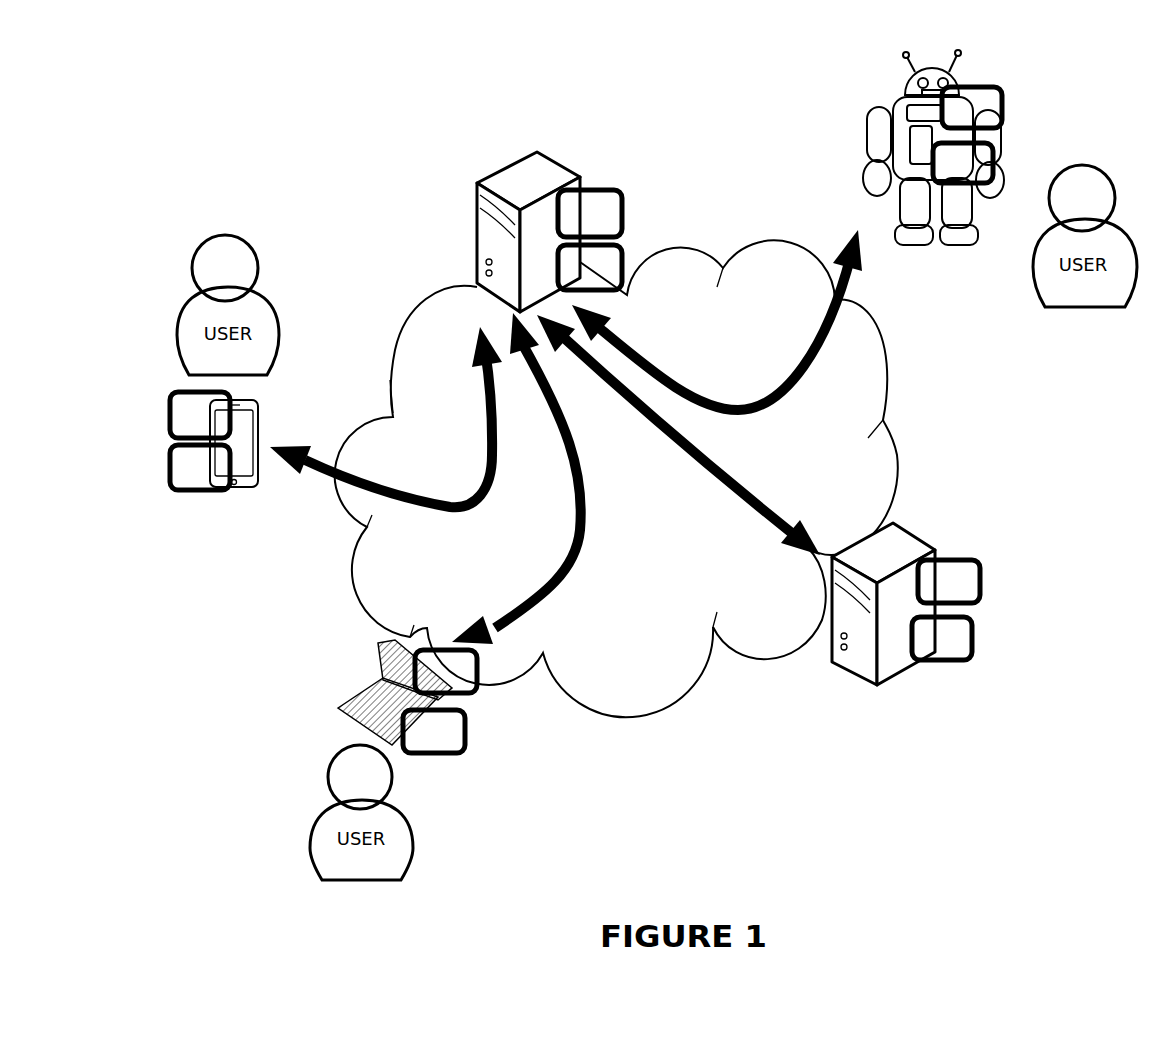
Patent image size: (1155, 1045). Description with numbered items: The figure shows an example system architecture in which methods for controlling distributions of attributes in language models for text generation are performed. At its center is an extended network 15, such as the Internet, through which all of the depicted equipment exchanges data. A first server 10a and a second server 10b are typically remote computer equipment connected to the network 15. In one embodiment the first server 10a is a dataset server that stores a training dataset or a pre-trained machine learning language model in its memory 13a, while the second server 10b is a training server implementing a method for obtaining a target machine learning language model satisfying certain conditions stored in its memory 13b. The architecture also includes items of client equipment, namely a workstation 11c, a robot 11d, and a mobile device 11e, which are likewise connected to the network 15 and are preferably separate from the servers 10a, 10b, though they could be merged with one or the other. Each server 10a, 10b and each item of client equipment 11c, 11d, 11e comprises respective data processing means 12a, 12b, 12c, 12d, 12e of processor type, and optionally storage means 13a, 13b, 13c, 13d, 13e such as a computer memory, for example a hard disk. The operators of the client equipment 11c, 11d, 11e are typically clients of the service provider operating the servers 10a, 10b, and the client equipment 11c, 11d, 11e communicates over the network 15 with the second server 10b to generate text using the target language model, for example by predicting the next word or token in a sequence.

The first server 10a is at (900, 677).
The second server 10b is at (537, 148).
The workstation 11c is at (367, 690).
The robot 11d is at (888, 58).
The mobile device 11e is at (270, 407).
The data processing means 12a is at (983, 573).
The data processing means 12b is at (626, 204).
The data processing means 12c is at (478, 662).
The data processing means 12d is at (1005, 97).
The data processing means 12e is at (232, 440).
The storage means 13a is at (975, 627).
The storage means 13b is at (627, 247).
The storage means 13c is at (477, 735).
The storage means 13d is at (1002, 152).
The storage means 13e is at (208, 493).
The extended network 15 is at (880, 347).